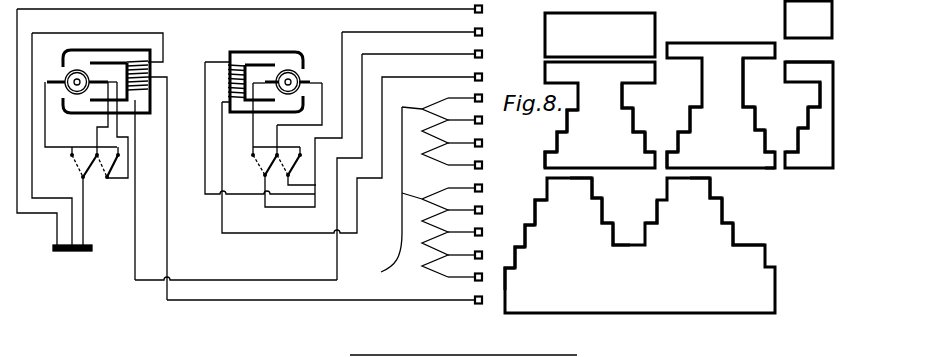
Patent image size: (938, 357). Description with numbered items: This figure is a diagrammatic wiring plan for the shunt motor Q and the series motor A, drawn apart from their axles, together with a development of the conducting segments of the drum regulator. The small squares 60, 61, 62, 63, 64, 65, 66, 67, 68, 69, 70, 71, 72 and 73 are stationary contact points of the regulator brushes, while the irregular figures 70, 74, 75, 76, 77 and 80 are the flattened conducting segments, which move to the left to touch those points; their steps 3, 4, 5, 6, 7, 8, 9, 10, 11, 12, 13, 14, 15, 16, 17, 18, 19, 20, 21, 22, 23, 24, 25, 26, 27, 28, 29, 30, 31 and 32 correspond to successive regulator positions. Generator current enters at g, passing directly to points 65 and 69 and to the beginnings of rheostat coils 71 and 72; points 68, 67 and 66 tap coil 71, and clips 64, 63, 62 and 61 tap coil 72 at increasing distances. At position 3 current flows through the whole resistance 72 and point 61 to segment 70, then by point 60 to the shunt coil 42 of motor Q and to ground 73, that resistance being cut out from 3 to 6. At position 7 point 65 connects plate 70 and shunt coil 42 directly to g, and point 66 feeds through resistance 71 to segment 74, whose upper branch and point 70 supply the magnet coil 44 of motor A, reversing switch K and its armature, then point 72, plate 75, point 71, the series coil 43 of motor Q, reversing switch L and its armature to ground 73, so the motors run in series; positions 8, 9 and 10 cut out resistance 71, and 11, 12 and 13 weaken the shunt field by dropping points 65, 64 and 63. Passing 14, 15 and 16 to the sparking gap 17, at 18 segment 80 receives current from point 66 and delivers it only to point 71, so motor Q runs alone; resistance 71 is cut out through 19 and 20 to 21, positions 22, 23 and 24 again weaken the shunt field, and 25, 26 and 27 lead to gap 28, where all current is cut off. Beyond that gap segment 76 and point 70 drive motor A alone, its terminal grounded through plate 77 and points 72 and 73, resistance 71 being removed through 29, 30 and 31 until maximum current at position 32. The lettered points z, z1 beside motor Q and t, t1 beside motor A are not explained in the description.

The regulator position 3 is at (510, 279).
The regulator position 4 is at (520, 257).
The regulator position 5 is at (530, 236).
The regulator position 6 is at (541, 212).
The regulator position 7 is at (551, 155).
The regulator position 8 is at (562, 137).
The regulator position 9 is at (572, 121).
The regulator position 10 is at (581, 184).
The regulator position 11 is at (600, 188).
The regulator position 12 is at (610, 210).
The regulator position 13 is at (621, 234).
The regulator position 14 is at (630, 95).
The regulator position 15 is at (641, 120).
The regulator position 16 is at (652, 142).
The gap position 17 is at (659, 211).
The regulator position 18 is at (674, 154).
The regulator position 19 is at (683, 135).
The regulator position 20 is at (695, 113).
The regulator position 21 is at (707, 179).
The regulator position 22 is at (719, 188).
The regulator position 23 is at (730, 210).
The regulator position 24 is at (749, 234).
The regulator position 25 is at (751, 82).
The regulator position 26 is at (762, 118).
The regulator position 27 is at (772, 141).
The gap 28 is at (776, 178).
The regulator position 29 is at (792, 148).
The regulator position 30 is at (801, 117).
The regulator position 31 is at (814, 94).
The final regulator position 32 is at (809, 55).
The shunt coil 42 is at (150, 66).
The series coil 43 is at (150, 87).
The magnet coil 44 is at (225, 82).
The contact point 60 is at (335, 301).
The contact point 61 is at (476, 278).
The contact point 62 is at (476, 256).
The contact point 63 is at (476, 233).
The contact point 64 is at (476, 211).
The contact point 65 is at (476, 189).
The contact point 66 is at (476, 166).
The contact point 67 is at (476, 144).
The contact point 68 is at (476, 121).
The contact point 69 is at (476, 99).
The regulator segment 70 is at (625, 192).
The rheostat coil 71 is at (433, 106).
The rheostat coil 72 is at (423, 151).
The ground 73 is at (278, 138).
The regulator segment 74 is at (600, 115).
The regulator plate 75 is at (600, 35).
The regulator segment 76 is at (809, 115).
The regulator plate 77 is at (808, 19).
The regulator segment 80 is at (721, 105).
The shunt motor Q is at (106, 76).
The series motor A is at (266, 70).
The reversing switch L is at (86, 164).
The reversing switch K is at (286, 135).
The contact z is at (103, 74).
The contact z1 is at (53, 74).
The contact t is at (265, 75).
The contact t1 is at (310, 75).
The generator connection g is at (381, 272).